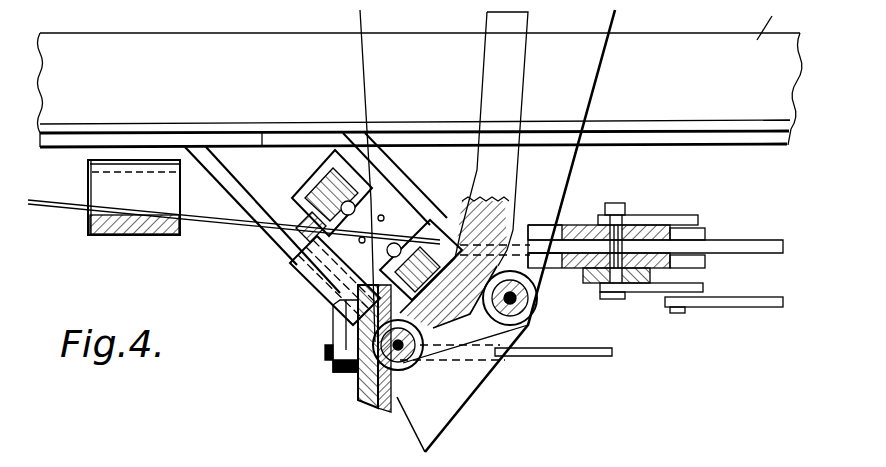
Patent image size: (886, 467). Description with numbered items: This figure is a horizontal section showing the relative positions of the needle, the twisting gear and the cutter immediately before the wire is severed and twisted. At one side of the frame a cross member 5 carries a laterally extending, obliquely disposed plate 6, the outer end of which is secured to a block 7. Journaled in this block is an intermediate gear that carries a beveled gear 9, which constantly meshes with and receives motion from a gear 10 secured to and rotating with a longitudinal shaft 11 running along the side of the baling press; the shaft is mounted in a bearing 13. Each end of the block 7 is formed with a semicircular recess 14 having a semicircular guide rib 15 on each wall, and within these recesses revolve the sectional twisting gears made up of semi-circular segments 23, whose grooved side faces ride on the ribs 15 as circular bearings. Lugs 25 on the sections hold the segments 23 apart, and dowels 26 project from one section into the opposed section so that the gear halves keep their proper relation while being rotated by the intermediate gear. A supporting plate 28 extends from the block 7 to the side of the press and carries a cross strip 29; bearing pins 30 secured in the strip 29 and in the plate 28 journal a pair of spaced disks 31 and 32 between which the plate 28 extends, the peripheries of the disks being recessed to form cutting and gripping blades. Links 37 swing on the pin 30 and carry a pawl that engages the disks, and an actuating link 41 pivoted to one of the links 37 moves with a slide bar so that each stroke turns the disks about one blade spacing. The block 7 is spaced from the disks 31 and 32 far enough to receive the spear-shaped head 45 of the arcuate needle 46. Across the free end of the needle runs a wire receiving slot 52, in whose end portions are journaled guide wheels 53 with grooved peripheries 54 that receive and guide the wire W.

The wire W is at (590, 108).
The cross member 5 is at (143, 236).
The plate 6 is at (259, 229).
The block 7 is at (322, 300).
The beveled gear 9 is at (296, 224).
The gear 10 is at (377, 400).
The longitudinal shaft 11 is at (567, 356).
The bearing 13 is at (342, 352).
The semicircular recess 14 is at (322, 160).
The semicircular guide rib 15 is at (313, 193).
The semi-circular segment 23 is at (380, 214).
The lug 25 is at (349, 201).
The dowel 26 is at (363, 238).
The supporting plate 28 is at (738, 250).
The cross strip 29 is at (590, 284).
The bearing pin 30 is at (627, 228).
The disk 31 is at (569, 272).
The disk 32 is at (572, 232).
The link 37 is at (683, 224).
The actuating link 41 is at (767, 302).
The spear-shaped head 45 is at (472, 403).
The arcuate needle 46 is at (522, 88).
The wire receiving slot 52 is at (427, 400).
The guide wheel 53 is at (408, 362).
The grooved periphery 54 is at (478, 352).